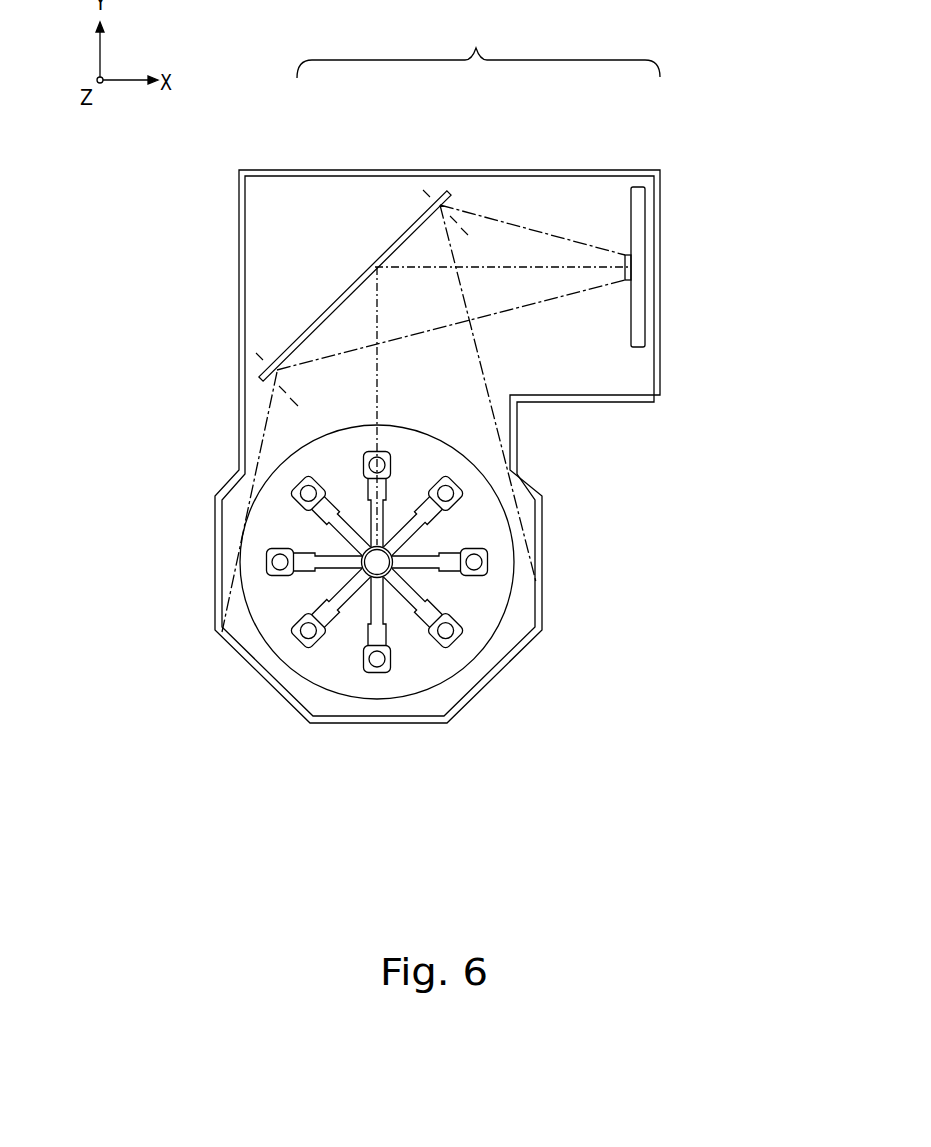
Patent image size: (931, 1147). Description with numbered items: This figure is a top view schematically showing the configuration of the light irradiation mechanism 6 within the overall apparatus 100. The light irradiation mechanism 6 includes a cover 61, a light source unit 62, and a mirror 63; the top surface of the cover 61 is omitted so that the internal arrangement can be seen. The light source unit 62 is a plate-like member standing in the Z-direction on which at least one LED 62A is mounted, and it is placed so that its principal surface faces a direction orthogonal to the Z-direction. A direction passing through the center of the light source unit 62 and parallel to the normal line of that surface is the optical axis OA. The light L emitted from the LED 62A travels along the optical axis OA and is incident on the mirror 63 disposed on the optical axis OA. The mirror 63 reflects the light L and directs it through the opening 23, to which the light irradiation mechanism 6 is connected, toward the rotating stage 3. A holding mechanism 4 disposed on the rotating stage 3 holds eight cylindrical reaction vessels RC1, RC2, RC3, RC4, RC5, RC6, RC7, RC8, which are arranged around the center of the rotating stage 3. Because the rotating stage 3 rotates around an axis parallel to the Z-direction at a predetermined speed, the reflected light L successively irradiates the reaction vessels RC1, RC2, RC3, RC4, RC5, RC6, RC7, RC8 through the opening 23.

The imaging optical device 100 is at (698, 95).
The light irradiation mechanism 6 is at (477, 47).
The cover 61 is at (300, 170).
The light source unit 62 is at (638, 186).
The LED 62A is at (625, 254).
The mirror 63 is at (403, 233).
The optical axis OA is at (491, 267).
The light L is at (545, 305).
The opening 23 is at (407, 396).
The rotating stage 3 is at (490, 645).
The holding mechanism 4 is at (289, 608).
The reaction vessel RC1 is at (377, 485).
The reaction vessel RC2 is at (437, 517).
The reaction vessel RC3 is at (443, 576).
The reaction vessel RC4 is at (421, 620).
The reaction vessel RC5 is at (379, 640).
The reaction vessel RC6 is at (332, 620).
The reaction vessel RC7 is at (308, 549).
The reaction vessel RC8 is at (332, 504).